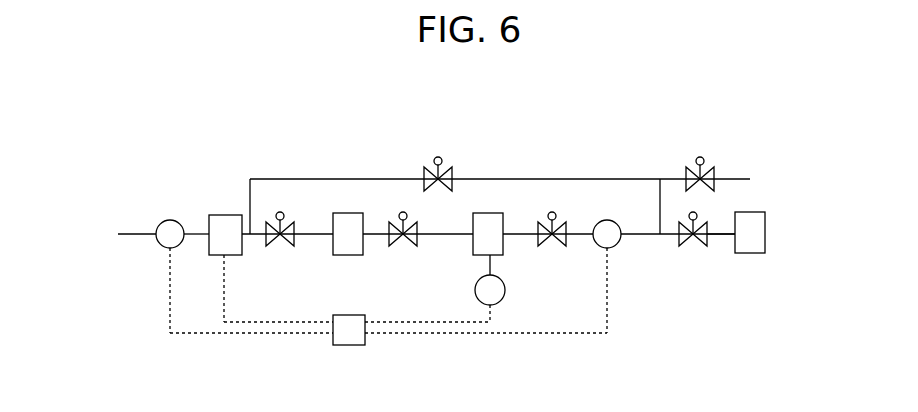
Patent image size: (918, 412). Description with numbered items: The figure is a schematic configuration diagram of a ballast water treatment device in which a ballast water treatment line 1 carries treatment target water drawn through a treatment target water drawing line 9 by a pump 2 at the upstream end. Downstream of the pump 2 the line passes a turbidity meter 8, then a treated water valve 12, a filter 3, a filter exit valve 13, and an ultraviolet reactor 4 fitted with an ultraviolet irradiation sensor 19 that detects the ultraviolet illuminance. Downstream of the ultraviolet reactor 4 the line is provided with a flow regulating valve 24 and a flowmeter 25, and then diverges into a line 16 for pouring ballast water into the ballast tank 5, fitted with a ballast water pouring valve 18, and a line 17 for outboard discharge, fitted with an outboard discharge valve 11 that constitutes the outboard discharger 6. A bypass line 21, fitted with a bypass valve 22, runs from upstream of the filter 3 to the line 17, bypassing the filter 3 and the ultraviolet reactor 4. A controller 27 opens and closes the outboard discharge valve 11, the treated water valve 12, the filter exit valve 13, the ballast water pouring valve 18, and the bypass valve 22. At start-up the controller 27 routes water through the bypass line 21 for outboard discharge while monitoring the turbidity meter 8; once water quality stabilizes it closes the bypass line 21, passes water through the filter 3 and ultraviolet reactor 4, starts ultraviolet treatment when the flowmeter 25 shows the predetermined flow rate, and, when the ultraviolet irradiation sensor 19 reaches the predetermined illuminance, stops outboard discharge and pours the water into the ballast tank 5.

The ballast water treatment line 1 is at (196, 234).
The pump 2 is at (170, 220).
The filter 3 is at (348, 255).
The ultraviolet reactor 4 is at (503, 248).
The ballast tank 5 is at (755, 253).
The outboard discharger 6 is at (704, 142).
The turbidity meter 8 is at (225, 215).
The treatment target water drawing line 9 is at (133, 234).
The outboard discharge valve 11 is at (724, 155).
The treated water valve 12 is at (285, 216).
The filter exit valve 13 is at (400, 215).
The line for pouring ballast water into the ballast tank 16 is at (718, 234).
The line for outboard discharge 17 is at (660, 210).
The ballast water pouring valve 18 is at (698, 216).
The ultraviolet irradiation sensor 19 is at (505, 290).
The bypass line 21 is at (483, 179).
The bypass valve 22 is at (440, 160).
The flow regulating valve 24 is at (557, 216).
The flowmeter 25 is at (617, 244).
The controller 27 is at (333, 318).